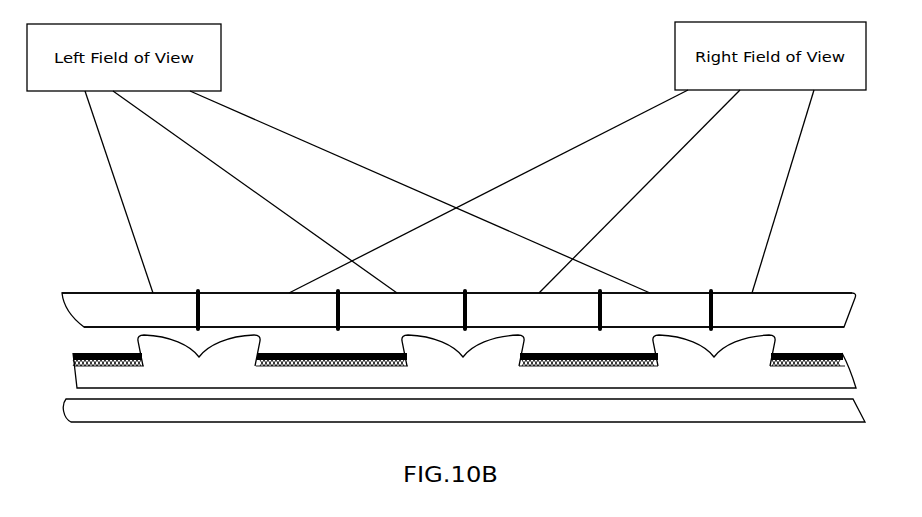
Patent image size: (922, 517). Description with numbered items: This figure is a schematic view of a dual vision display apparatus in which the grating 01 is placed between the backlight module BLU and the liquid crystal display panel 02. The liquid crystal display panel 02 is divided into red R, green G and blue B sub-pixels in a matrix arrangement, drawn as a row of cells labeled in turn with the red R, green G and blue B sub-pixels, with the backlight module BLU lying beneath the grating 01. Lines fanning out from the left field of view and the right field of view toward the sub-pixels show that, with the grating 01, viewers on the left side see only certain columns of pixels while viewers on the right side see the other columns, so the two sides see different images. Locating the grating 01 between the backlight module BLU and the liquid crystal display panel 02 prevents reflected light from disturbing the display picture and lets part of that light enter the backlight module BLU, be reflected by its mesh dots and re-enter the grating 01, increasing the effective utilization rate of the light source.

The grating 01 is at (855, 339).
The liquid crystal display panel 02 is at (478, 310).
The backlight module BLU is at (464, 410).
The red sub-pixel R is at (331, 310).
The green sub-pixel G is at (454, 310).
The blue sub-pixel B is at (855, 292).